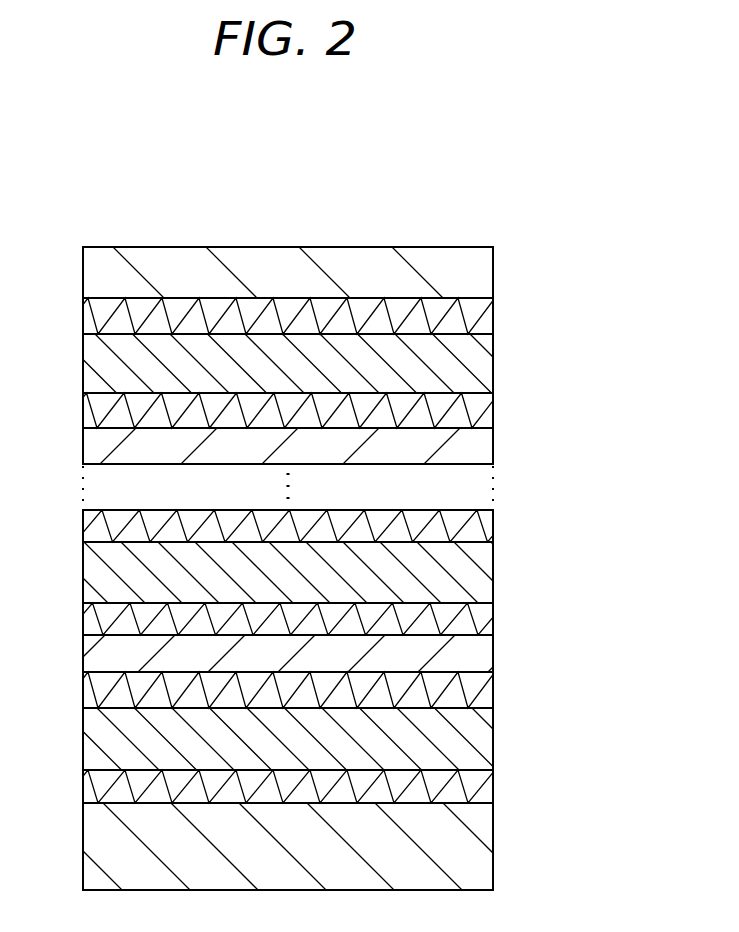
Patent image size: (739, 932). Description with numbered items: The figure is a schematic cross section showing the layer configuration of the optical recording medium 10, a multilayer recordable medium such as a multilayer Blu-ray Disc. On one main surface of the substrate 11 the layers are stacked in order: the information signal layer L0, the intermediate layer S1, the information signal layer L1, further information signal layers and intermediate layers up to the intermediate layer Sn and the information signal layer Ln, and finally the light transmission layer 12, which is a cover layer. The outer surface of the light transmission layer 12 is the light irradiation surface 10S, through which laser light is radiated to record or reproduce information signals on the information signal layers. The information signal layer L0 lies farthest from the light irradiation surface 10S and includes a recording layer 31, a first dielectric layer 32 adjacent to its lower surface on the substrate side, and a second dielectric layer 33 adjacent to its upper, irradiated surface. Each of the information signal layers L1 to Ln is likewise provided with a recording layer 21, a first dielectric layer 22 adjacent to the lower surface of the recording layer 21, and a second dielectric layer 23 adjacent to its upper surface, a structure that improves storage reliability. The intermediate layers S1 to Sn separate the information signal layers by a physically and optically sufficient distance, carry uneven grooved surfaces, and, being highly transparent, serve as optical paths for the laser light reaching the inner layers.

The optical recording medium 10 is at (159, 225).
The light irradiation surface 10S is at (447, 246).
The light transmission layer 12 is at (482, 271).
The second dielectric layer 23 is at (481, 313).
The recording layer 21 is at (482, 364).
The first dielectric layer 22 is at (481, 409).
The intermediate layer Sn is at (482, 449).
The intermediate layer S1 is at (482, 654).
The second dielectric layer 33 is at (481, 691).
The recording layer 31 is at (482, 739).
The first dielectric layer 32 is at (481, 784).
The substrate 11 is at (482, 849).
The information signal layer Ln is at (593, 305).
The information signal layer L1 is at (593, 512).
The information signal layer L0 is at (593, 680).